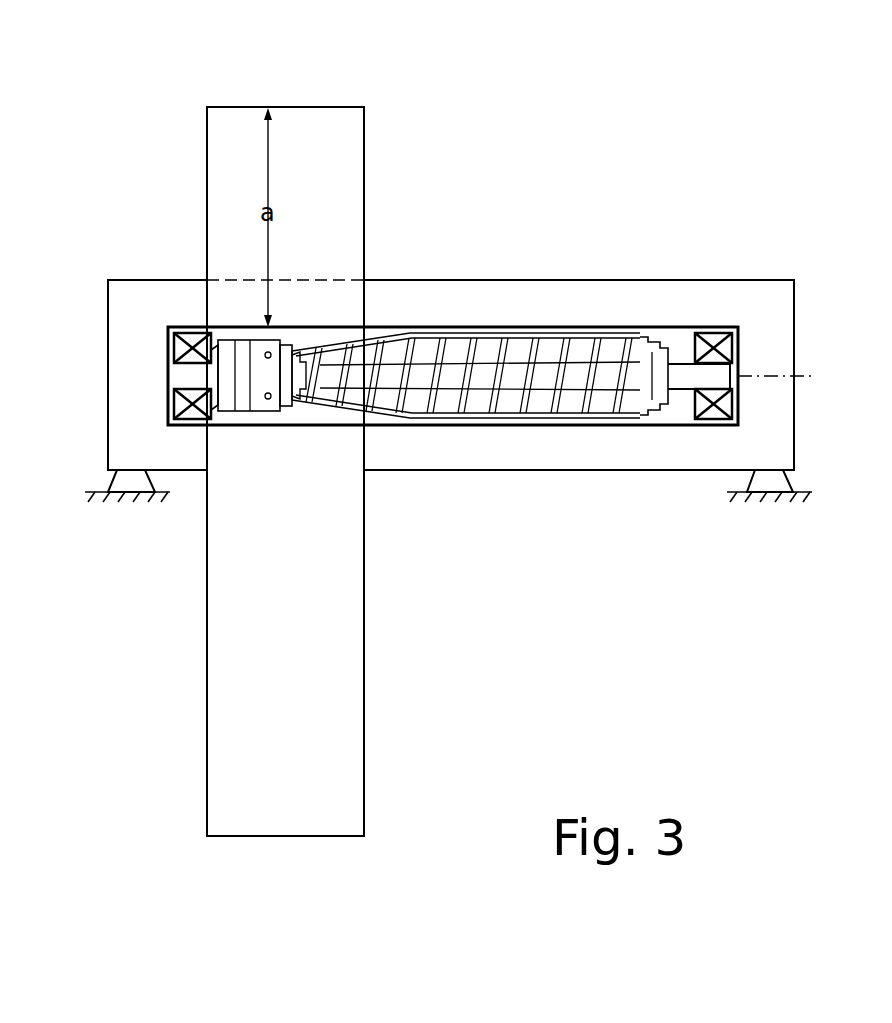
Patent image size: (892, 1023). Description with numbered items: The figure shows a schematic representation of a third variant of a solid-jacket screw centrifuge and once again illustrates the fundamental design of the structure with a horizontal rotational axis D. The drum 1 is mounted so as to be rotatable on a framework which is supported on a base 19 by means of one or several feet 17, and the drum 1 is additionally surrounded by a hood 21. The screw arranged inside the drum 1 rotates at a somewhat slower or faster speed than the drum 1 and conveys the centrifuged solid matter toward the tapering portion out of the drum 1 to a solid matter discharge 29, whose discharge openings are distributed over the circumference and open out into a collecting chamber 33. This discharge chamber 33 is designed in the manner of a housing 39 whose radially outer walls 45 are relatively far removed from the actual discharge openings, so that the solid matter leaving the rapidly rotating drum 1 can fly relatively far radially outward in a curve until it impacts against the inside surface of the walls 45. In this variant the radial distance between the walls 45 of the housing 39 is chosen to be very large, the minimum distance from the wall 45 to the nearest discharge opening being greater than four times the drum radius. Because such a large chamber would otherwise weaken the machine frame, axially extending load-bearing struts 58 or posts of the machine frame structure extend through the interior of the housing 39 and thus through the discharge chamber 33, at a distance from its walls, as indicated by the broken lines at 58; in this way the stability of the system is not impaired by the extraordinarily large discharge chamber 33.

The drum 1 is at (537, 333).
The feet 17 is at (118, 484).
The base 19 is at (124, 495).
The hood 21 is at (710, 280).
The solid matter discharge 29 is at (247, 410).
The discharge chamber 33 is at (228, 120).
The housing 39 is at (340, 106).
The walls 45 is at (304, 103).
The struts 58 is at (312, 277).
The rotational axis D is at (803, 373).